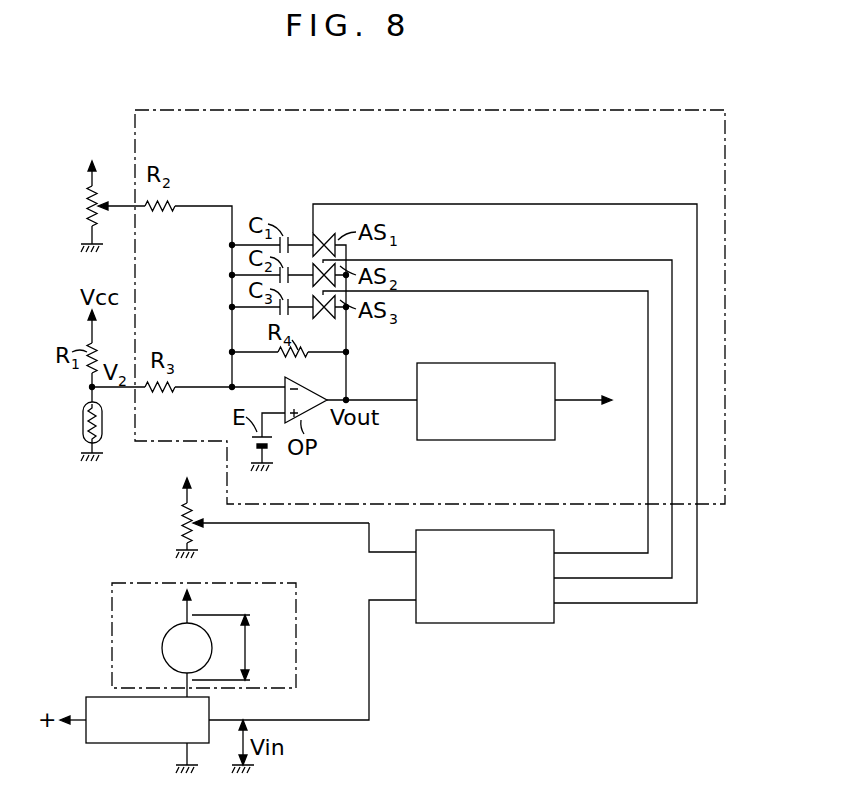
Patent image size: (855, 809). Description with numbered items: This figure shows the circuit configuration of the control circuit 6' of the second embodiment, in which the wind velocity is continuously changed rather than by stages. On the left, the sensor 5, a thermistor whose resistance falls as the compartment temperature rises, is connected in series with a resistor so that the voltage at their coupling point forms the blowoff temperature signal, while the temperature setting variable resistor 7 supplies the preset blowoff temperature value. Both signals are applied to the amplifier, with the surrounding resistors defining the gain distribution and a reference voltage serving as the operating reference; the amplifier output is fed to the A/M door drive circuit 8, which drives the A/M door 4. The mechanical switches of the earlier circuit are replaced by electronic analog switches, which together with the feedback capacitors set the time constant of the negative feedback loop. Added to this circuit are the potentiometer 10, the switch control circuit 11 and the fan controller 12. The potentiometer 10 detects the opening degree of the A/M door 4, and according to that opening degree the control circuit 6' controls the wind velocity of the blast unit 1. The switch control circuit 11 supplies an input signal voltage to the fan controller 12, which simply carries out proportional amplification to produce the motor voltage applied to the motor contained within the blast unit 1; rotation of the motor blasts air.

The blast unit 1 is at (284, 590).
The A/M door 4 is at (597, 408).
The sensor 5 is at (84, 421).
The control circuit 6' is at (430, 285).
The temperature setting variable resistor 7 is at (84, 208).
The A/M door drive circuit 8 is at (532, 362).
The potentiometer 10 is at (180, 523).
The switch control circuit 11 is at (545, 531).
The fan controller 12 is at (124, 745).